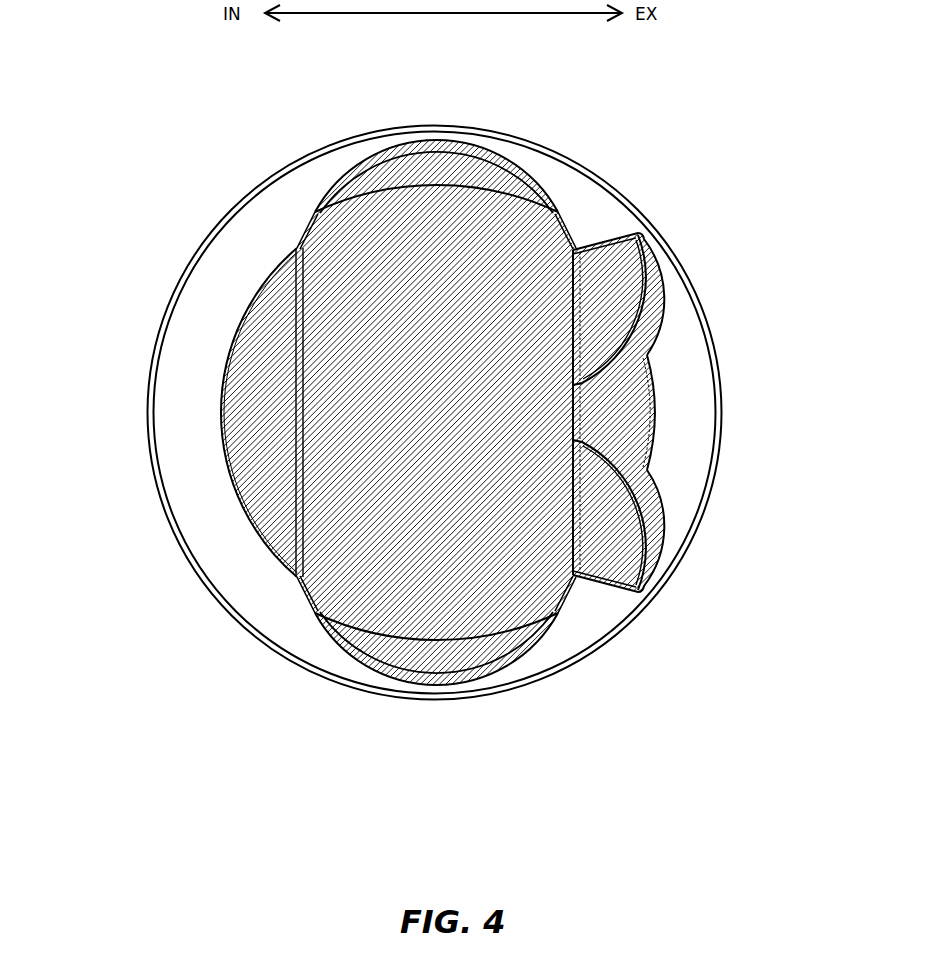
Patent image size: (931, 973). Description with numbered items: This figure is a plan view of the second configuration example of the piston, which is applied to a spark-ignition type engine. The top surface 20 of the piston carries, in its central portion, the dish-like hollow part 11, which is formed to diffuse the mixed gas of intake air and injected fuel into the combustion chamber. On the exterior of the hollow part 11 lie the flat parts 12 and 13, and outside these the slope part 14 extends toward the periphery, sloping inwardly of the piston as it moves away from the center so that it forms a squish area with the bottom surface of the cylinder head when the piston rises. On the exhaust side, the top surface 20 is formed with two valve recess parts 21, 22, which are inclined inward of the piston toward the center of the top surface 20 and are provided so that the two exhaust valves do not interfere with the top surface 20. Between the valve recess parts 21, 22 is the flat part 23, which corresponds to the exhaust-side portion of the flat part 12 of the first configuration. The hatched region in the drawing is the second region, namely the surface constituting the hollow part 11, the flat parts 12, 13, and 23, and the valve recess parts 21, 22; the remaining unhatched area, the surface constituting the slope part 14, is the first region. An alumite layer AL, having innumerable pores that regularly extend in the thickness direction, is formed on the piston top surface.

The hollow part 11 is at (542, 575).
The flat part 12 is at (268, 513).
The flat part 13 is at (387, 177).
The slope part 14 is at (683, 457).
The top surface 20 is at (595, 173).
The valve recess part 21 is at (617, 545).
The valve recess part 22 is at (627, 272).
The flat part 23 is at (632, 410).
The alumite layer AL is at (176, 380).